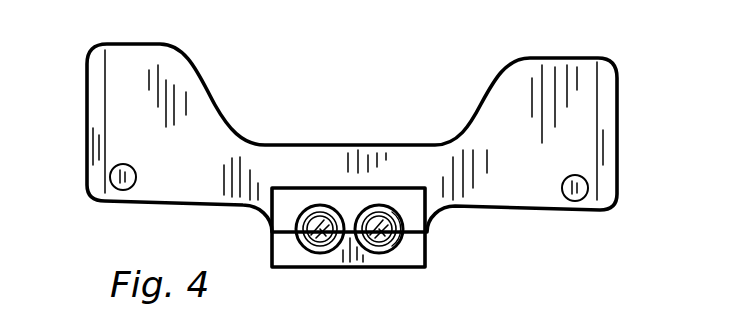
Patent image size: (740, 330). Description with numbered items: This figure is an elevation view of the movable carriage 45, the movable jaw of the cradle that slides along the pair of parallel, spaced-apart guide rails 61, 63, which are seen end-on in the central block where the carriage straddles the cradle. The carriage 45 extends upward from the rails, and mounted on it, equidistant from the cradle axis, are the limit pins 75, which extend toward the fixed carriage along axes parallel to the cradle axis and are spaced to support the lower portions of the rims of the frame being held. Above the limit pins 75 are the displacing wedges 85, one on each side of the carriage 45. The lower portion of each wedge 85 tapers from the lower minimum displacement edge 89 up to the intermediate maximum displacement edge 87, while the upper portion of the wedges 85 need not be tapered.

The movable carriage 45 is at (590, 72).
The guide rail 61 is at (384, 243).
The guide rail 63 is at (323, 240).
The limit pins 75 is at (133, 186).
The displacing wedges 85 is at (97, 126).
The intermediate maximum displacement edge 87 is at (88, 72).
The lower minimum displacement edge 89 is at (100, 172).